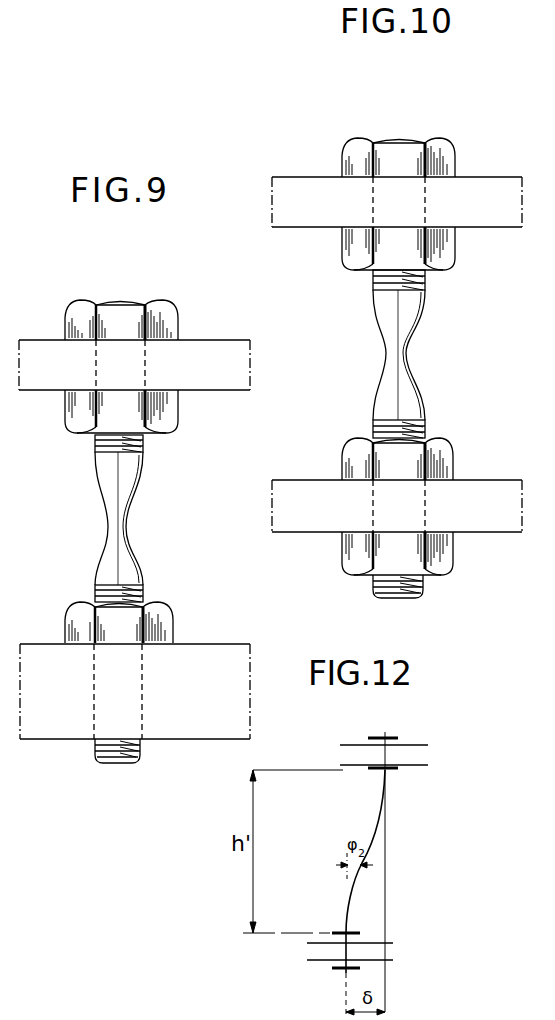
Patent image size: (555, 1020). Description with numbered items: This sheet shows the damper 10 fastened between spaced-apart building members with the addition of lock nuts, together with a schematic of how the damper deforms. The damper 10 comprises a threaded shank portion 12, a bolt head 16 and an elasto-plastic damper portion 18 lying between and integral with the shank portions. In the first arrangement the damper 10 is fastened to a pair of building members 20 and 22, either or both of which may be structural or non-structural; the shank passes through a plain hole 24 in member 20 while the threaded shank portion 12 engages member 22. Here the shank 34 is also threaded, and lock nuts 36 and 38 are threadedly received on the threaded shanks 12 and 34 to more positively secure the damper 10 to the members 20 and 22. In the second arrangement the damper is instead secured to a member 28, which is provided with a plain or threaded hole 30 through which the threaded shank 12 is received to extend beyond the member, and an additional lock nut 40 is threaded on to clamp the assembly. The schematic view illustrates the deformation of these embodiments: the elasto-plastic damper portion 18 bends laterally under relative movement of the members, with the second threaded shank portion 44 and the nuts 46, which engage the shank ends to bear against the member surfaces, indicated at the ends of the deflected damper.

In FIG. 9, the damper 10 is at (121, 291).
In FIG. 10, the damper 10 is at (425, 126).
In FIG. 9, the threaded shank portion 12 is at (125, 762).
In FIG. 10, the threaded shank portion 12 is at (423, 590).
In FIG. 9, the bolt head 16 is at (66, 316).
In FIG. 10, the bolt head 16 is at (449, 160).
In FIG. 9, the elasto-plastic damper portion 18 is at (131, 525).
In FIG. 10, the elasto-plastic damper portion 18 is at (405, 352).
In FIG. 12, the elasto-plastic damper portion 18 is at (386, 822).
In FIG. 9, the building member 20 is at (240, 360).
In FIG. 10, the building member 20 is at (505, 188).
In FIG. 9, the building member 22 is at (63, 722).
In FIG. 9, the plain hole 24 is at (150, 350).
In FIG. 10, the plain hole 24 is at (368, 208).
In FIG. 10, the member 28 is at (302, 487).
In FIG. 9, the hole 30 is at (95, 668).
In FIG. 10, the hole 30 is at (370, 510).
In FIG. 9, the shank 34 is at (140, 448).
In FIG. 10, the shank 34 is at (373, 280).
In FIG. 9, the lock nut 36 is at (178, 413).
In FIG. 10, the lock nut 36 is at (452, 252).
In FIG. 9, the lock nut 38 is at (173, 620).
In FIG. 10, the lock nut 38 is at (457, 462).
In FIG. 10, the additional lock nut 40 is at (455, 550).
In FIG. 12, the second threaded shank portion 44 is at (407, 780).
In FIG. 12, the nuts 46 is at (400, 740).